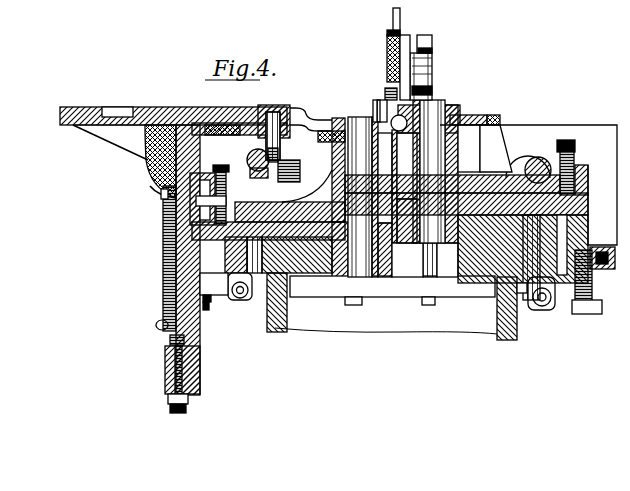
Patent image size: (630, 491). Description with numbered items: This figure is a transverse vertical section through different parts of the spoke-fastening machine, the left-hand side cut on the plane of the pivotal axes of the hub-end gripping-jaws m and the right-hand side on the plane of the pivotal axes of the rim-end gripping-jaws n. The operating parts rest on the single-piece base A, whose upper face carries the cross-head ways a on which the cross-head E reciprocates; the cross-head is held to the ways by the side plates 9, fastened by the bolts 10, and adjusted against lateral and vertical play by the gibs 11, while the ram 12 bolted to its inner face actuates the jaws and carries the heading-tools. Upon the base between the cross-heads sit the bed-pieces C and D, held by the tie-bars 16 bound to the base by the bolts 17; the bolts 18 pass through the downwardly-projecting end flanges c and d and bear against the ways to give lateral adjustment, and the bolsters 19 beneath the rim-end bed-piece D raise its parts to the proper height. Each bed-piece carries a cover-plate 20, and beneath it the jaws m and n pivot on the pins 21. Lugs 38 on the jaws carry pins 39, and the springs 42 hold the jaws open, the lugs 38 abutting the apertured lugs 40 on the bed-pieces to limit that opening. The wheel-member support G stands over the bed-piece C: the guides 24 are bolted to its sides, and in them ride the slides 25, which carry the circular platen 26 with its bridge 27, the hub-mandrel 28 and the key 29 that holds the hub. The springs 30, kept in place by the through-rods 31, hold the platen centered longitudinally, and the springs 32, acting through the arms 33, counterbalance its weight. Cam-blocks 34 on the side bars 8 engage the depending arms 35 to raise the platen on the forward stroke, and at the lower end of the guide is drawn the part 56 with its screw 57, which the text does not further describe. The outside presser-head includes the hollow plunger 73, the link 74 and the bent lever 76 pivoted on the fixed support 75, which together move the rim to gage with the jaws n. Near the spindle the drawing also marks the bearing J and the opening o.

The platen 26 is at (192, 108).
The bridge 27 is at (305, 118).
The slides 25 is at (164, 299).
The springs 30 is at (158, 152).
The through-rods 31 is at (157, 176).
The vertically-extending guides 24 is at (198, 340).
The bolts 18 is at (163, 244).
The springs 32 is at (164, 269).
The transversely-extending arms 33 is at (158, 322).
The bracket 56 is at (167, 379).
The screw 57 is at (188, 410).
The side bars 8 is at (247, 162).
The pins 39 is at (218, 168).
The laterally-projecting lugs 38 is at (593, 186).
The depending arms 35 is at (278, 145).
The cam-block 34 is at (300, 174).
The hub-end gripping-jaws m is at (307, 186).
The gibs 11 is at (243, 299).
The side plates 9 is at (211, 298).
The bolts 10 is at (597, 322).
The end flange c is at (214, 284).
The bed-piece C is at (340, 278).
The cross-head ways a is at (385, 293).
The tie-bars 16 is at (470, 297).
The bolts 17 is at (362, 300).
The base A is at (386, 337).
The pins 21 is at (354, 277).
The journal J is at (401, 156).
The opening o is at (406, 182).
The fixed support 75 is at (432, 79).
The hollow plunger 73 is at (430, 110).
The link 74 is at (432, 90).
The bent lever 76 is at (420, 67).
The hub-mandrel 28 is at (387, 56).
The key 29 is at (393, 30).
The wheel-member support G is at (385, 82).
The cover-plate 20 is at (472, 117).
The rim-end gripping-jaws n is at (485, 148).
The springs 42 is at (574, 150).
The cross-head E is at (576, 152).
The apertured lugs 40 is at (578, 174).
The bed-piece D is at (588, 205).
The bolsters 19 is at (580, 223).
The end flange d is at (588, 239).
The rams 12 is at (608, 262).